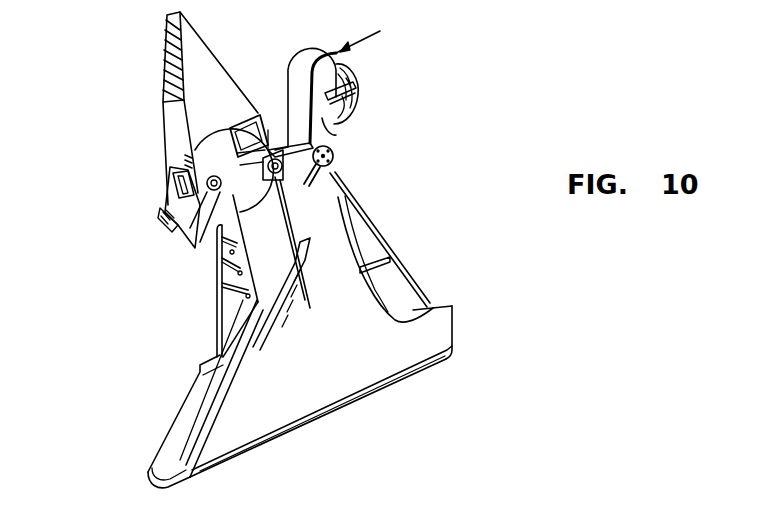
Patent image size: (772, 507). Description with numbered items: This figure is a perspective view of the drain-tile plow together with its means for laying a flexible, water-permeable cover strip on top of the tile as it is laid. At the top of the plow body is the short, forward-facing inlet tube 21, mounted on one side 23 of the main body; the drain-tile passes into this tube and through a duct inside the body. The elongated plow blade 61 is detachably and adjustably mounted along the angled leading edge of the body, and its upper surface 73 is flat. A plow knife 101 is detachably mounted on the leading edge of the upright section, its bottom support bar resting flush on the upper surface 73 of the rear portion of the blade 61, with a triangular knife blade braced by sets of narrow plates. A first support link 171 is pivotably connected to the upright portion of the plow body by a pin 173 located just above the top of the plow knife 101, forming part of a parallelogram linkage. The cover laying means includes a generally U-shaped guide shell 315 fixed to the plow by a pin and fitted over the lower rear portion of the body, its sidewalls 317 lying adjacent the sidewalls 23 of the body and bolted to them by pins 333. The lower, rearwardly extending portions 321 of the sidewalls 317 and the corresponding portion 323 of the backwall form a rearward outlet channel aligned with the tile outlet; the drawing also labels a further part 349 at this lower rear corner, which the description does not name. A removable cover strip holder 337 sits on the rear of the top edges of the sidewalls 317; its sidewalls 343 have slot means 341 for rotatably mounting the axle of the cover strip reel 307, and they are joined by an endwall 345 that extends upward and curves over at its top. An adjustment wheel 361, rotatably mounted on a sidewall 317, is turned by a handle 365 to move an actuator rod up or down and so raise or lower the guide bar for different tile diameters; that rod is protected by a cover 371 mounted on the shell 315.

The inlet tube 21 is at (247, 116).
The side of the main body 23 is at (276, 257).
The plow blade 61 is at (193, 387).
The upper surface of the blade 73 is at (180, 438).
The plow knife 101 is at (217, 265).
The first support link 171 is at (168, 202).
The pin 173 is at (214, 183).
The reel 307 is at (355, 82).
The guide shell 315 is at (355, 222).
The sidewalls 317 is at (335, 268).
The lower rearwardly extending portion of the sidewall 321 is at (443, 335).
The lower rearwardly extending portion of the backwall 323 is at (415, 313).
The pins 333 is at (300, 278).
The cover strip holder 337 is at (376, 36).
The slot means 341 is at (352, 108).
The sidewalls of the holder 343 is at (336, 135).
The endwall 345 is at (307, 67).
The end face 349 is at (457, 317).
The adjustment wheel 361 is at (333, 154).
The handle 365 is at (312, 188).
The cover 371 is at (413, 278).